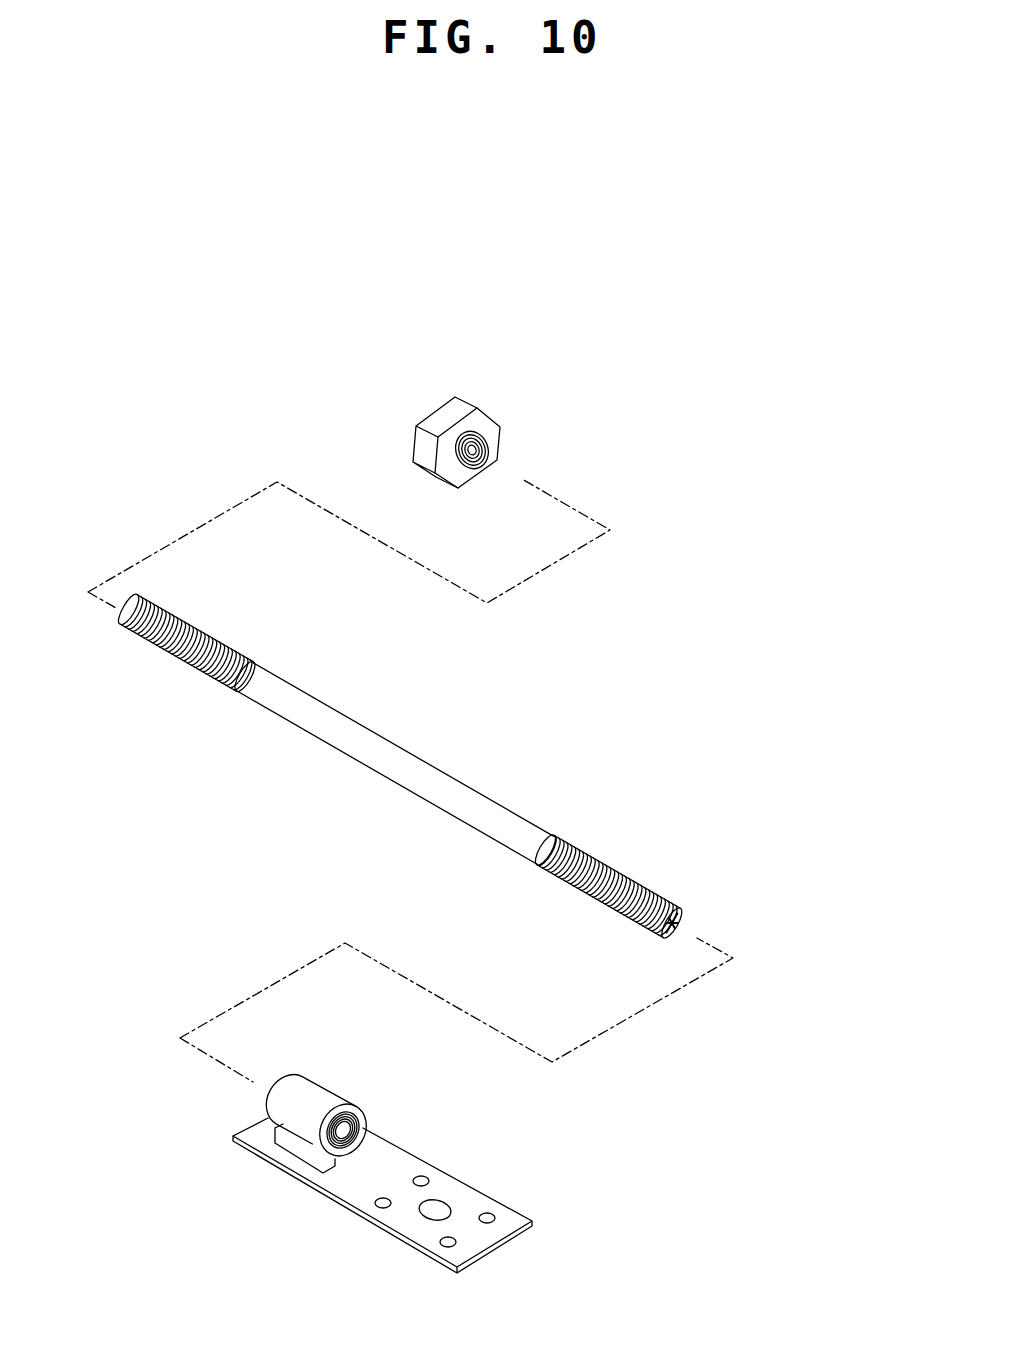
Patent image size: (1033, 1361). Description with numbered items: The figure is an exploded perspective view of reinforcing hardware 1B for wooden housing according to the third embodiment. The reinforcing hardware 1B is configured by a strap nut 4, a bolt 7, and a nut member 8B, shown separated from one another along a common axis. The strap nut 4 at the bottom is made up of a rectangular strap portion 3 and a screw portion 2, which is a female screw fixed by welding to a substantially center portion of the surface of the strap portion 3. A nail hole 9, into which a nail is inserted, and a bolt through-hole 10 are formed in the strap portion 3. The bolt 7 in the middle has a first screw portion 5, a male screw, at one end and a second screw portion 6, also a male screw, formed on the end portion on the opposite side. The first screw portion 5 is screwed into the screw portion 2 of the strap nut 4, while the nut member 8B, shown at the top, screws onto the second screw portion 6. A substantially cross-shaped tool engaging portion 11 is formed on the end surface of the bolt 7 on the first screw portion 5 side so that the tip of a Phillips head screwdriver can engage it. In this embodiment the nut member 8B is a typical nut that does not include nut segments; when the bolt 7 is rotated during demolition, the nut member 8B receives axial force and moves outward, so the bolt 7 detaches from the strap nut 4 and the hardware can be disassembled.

The reinforcing hardware 1B is at (683, 355).
The screw portion 2 is at (288, 1117).
The strap portion 3 is at (338, 1194).
The strap nut 4 is at (350, 1184).
The first screw portion 5 is at (623, 873).
The second screw portion 6 is at (194, 621).
The bolt 7 is at (477, 788).
The nut member 8B is at (490, 408).
The nail hole 9 is at (386, 1201).
The bolt through-hole 10 is at (437, 1207).
The tool engaging portion 11 is at (688, 922).